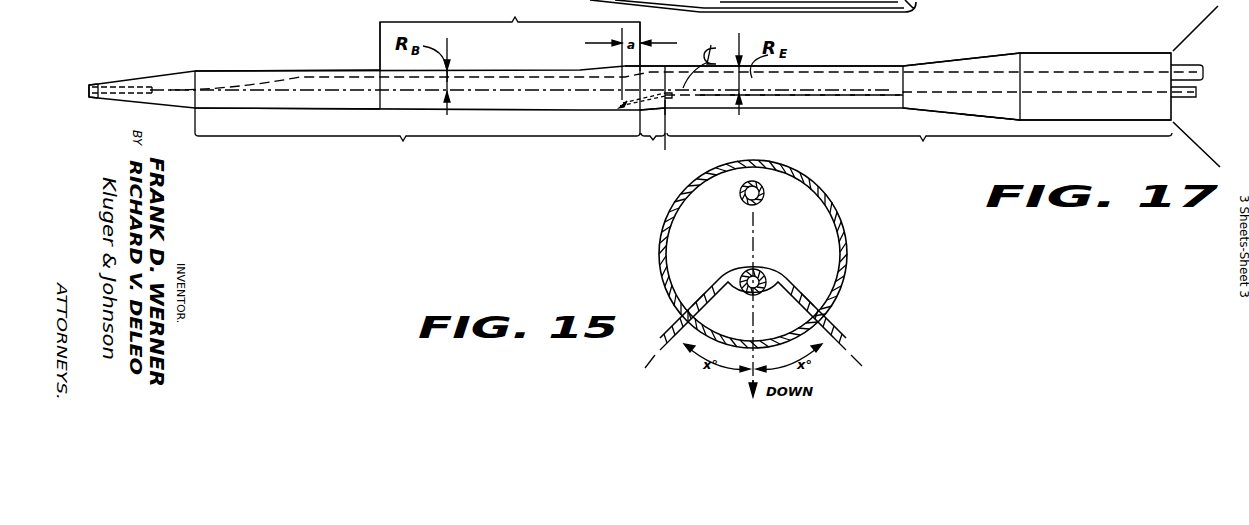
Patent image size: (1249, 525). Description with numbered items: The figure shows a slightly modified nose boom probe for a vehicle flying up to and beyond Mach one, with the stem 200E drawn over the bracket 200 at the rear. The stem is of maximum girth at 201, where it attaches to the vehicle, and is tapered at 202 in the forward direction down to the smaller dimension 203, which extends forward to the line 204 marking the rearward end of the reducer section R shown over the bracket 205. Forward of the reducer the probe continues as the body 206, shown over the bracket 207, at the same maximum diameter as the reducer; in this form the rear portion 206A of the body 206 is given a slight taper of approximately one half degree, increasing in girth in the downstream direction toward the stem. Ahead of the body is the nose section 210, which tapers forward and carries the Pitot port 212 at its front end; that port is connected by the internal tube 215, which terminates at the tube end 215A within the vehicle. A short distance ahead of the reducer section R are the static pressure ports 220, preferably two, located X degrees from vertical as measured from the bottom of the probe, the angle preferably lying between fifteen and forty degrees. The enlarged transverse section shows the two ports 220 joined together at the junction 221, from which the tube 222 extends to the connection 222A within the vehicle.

In FIG. 17, the bracket 200 is at (641, 93).
In FIG. 17, the stem 200E is at (988, 124).
In FIG. 17, the maximum girth portion of stem 201 is at (1110, 52).
In FIG. 17, the tapered portion of stem 202 is at (964, 62).
In FIG. 17, the reduced dimension section 203 is at (836, 66).
In FIG. 17, the line at rearward end of reducer section 204 is at (667, 113).
In FIG. 17, the bracket 205 is at (660, 140).
In FIG. 17, the body 206 is at (348, 102).
In FIG. 17, the tapered rear portion of body 206A is at (510, 35).
In FIG. 17, the bracket 207 is at (417, 148).
In FIG. 17, the nose section 210 is at (166, 73).
In FIG. 17, the Pitot port 212 is at (273, 4).
In FIG. 17, the internal tube 215 is at (302, 78).
In FIG. 15, the internal tube 215 is at (740, 195).
In FIG. 17, the tube termination 215A is at (1195, 63).
In FIG. 17, the static pressure ports 220 is at (620, 107).
In FIG. 15, the static pressure ports 220 is at (835, 325).
In FIG. 15, the junction 221 is at (744, 264).
In FIG. 17, the tube 222 is at (804, 98).
In FIG. 15, the tube 222 is at (760, 267).
In FIG. 17, the connection 222A is at (1190, 100).
In FIG. 15, the reducer section R is at (841, 206).